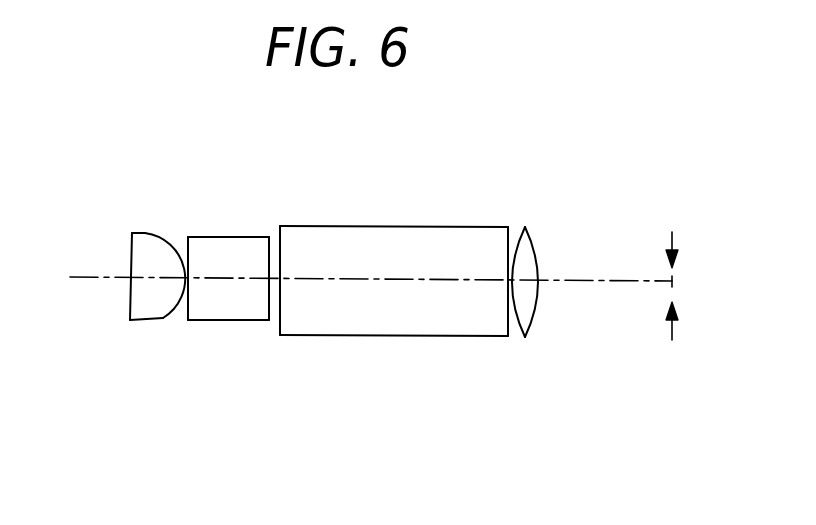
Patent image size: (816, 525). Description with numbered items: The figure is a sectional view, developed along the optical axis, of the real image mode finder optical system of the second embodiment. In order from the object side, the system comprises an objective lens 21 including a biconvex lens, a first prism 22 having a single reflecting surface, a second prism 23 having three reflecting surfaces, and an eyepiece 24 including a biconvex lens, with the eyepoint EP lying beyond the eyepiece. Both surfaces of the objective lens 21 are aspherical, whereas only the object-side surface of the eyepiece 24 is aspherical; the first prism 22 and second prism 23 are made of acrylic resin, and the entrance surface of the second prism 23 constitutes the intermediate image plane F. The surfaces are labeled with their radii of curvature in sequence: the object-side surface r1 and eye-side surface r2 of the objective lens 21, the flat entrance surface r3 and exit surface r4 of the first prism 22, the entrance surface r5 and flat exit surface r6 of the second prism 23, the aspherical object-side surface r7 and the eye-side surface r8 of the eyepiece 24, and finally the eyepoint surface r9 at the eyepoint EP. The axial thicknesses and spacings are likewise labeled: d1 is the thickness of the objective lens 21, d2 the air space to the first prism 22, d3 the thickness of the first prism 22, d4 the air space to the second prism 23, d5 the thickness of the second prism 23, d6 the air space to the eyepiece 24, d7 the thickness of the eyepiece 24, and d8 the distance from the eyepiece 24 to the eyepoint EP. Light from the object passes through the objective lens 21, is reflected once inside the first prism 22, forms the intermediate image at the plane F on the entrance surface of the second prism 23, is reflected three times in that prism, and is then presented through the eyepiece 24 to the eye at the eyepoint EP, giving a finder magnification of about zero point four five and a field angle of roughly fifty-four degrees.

The objective lens 21 is at (136, 220).
The first prism 22 is at (238, 220).
The second prism 23 is at (394, 223).
The eyepiece 24 is at (535, 223).
The radius of curvature of first surface r1 is at (128, 258).
The radius of curvature of second surface r2 is at (166, 236).
The radius of curvature of third surface r3 is at (189, 245).
The radius of curvature of fourth surface r4 is at (269, 253).
The radius of curvature of fifth surface r5 is at (281, 242).
The radius of curvature of sixth surface r6 is at (507, 245).
The radius of curvature of seventh surface r7 is at (513, 262).
The radius of curvature of eighth surface r8 is at (540, 262).
The eyepoint surface r9 is at (672, 246).
The thickness of objective lens d1 is at (130, 316).
The space between objective lens and first prism d2 is at (184, 300).
The thickness of first prism d3 is at (233, 285).
The space between first prism and second prism d4 is at (275, 300).
The thickness of second prism d5 is at (397, 285).
The space between second prism and eyepiece d6 is at (511, 300).
The thickness of eyepiece d7 is at (536, 299).
The space between eyepiece and eyepoint d8 is at (598, 284).
The intermediate image plane F is at (281, 307).
The eyepoint EP is at (672, 322).